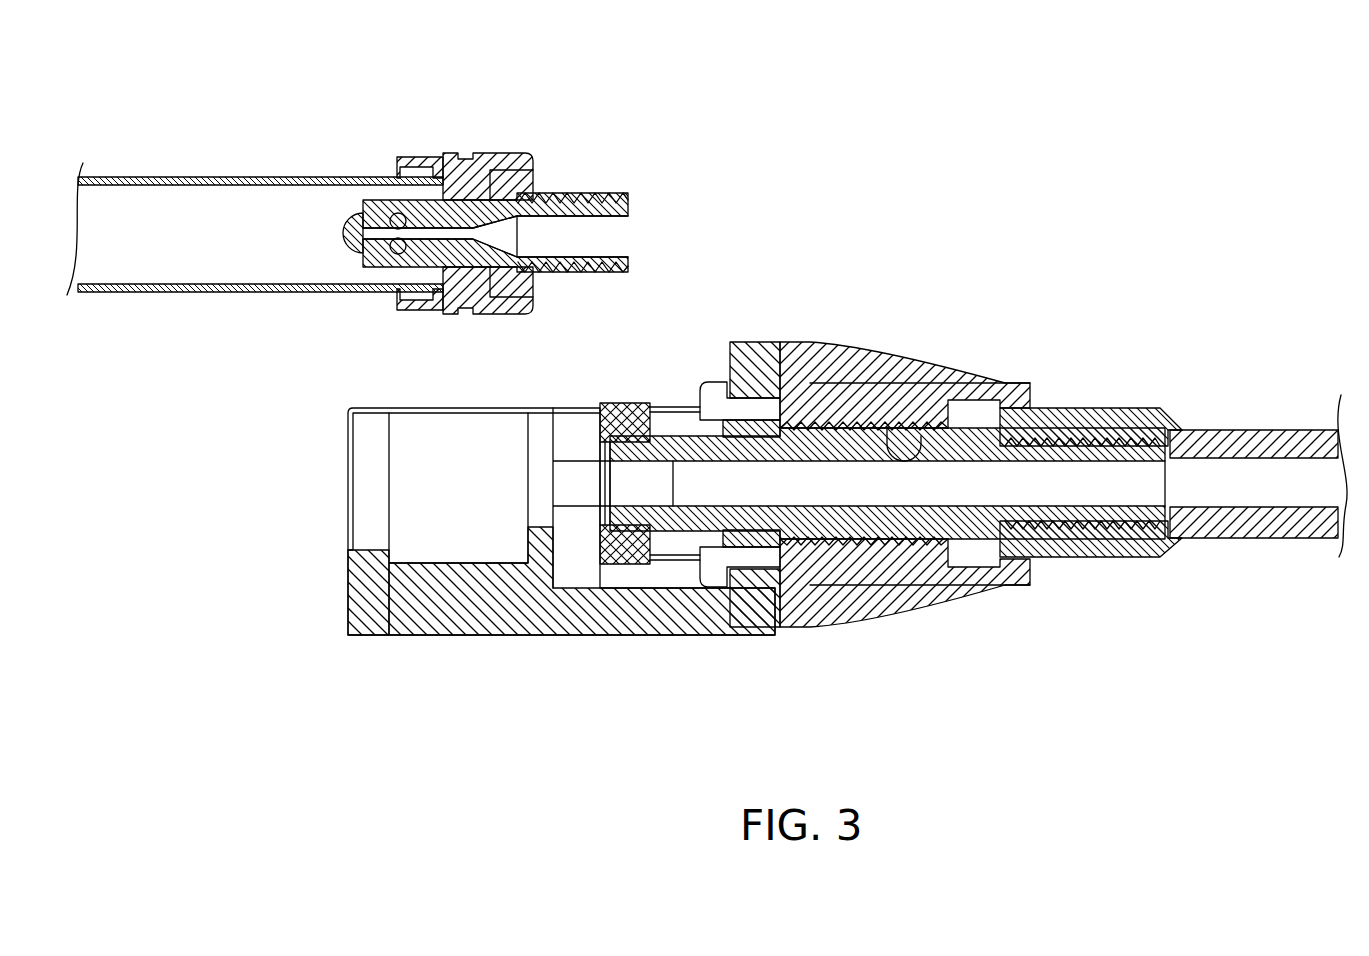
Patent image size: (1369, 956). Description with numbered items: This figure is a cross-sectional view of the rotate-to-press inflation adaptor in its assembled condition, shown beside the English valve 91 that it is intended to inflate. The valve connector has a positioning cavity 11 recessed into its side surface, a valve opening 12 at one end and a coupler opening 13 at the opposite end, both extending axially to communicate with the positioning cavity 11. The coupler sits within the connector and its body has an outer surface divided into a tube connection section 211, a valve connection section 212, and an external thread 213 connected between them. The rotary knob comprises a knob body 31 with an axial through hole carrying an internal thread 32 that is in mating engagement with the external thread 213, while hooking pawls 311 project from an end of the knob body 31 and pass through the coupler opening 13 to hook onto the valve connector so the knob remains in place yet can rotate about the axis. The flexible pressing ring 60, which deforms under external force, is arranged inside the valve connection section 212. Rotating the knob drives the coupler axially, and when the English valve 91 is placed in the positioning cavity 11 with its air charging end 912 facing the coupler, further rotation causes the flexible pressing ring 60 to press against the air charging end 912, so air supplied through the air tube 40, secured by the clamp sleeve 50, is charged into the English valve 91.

The English valve 91 is at (444, 156).
The air charging end 912 is at (591, 195).
The positioning cavity 11 is at (469, 561).
The valve opening 12 is at (372, 553).
The flexible pressing ring 60 is at (608, 440).
The valve connection section 212 is at (620, 563).
The tube connection section 211 is at (1101, 512).
The internal thread 32 is at (887, 427).
The external thread 213 is at (922, 447).
The hooking pawls 311 is at (712, 383).
The coupler opening 13 is at (736, 587).
The knob body 31 is at (870, 590).
The clamp sleeve 50 is at (1107, 408).
The air tube 40 is at (1258, 430).